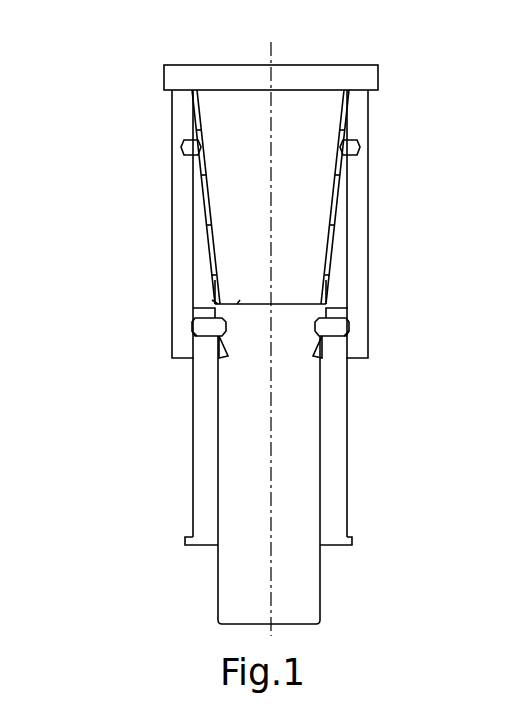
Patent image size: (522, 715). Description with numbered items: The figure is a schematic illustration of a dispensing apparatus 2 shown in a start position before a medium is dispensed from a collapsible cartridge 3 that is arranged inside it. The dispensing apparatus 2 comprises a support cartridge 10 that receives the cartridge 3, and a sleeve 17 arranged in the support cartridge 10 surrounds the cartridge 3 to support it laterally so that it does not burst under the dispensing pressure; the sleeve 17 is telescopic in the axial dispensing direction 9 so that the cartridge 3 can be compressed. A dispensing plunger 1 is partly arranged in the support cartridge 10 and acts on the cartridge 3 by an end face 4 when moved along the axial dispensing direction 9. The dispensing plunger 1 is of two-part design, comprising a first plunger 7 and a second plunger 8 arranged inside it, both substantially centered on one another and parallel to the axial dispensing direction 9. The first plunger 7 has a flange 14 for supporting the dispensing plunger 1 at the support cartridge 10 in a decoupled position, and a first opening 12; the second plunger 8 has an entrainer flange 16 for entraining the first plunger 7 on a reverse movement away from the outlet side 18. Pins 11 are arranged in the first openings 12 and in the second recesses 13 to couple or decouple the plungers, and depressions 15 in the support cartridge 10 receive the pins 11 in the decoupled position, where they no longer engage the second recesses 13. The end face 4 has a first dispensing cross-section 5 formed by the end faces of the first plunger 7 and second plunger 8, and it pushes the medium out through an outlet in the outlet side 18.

The dispensing plunger 1 is at (323, 547).
The dispensing apparatus 2 is at (437, 50).
The collapsible cartridge 3 is at (199, 170).
The end face 4 is at (283, 303).
The first dispensing cross-section 5 is at (240, 302).
The first plunger 7 is at (348, 470).
The second plunger 8 is at (217, 588).
The axial dispensing direction 9 is at (274, 60).
The support cartridge 10 is at (368, 271).
The pins 11 is at (208, 325).
The first opening 12 is at (195, 320).
The second recess 13 is at (224, 350).
The flange 14 is at (185, 537).
The depressions 15 is at (188, 147).
The entrainer flange 16 is at (212, 306).
The sleeve 17 is at (340, 192).
The outlet side 18 is at (228, 68).